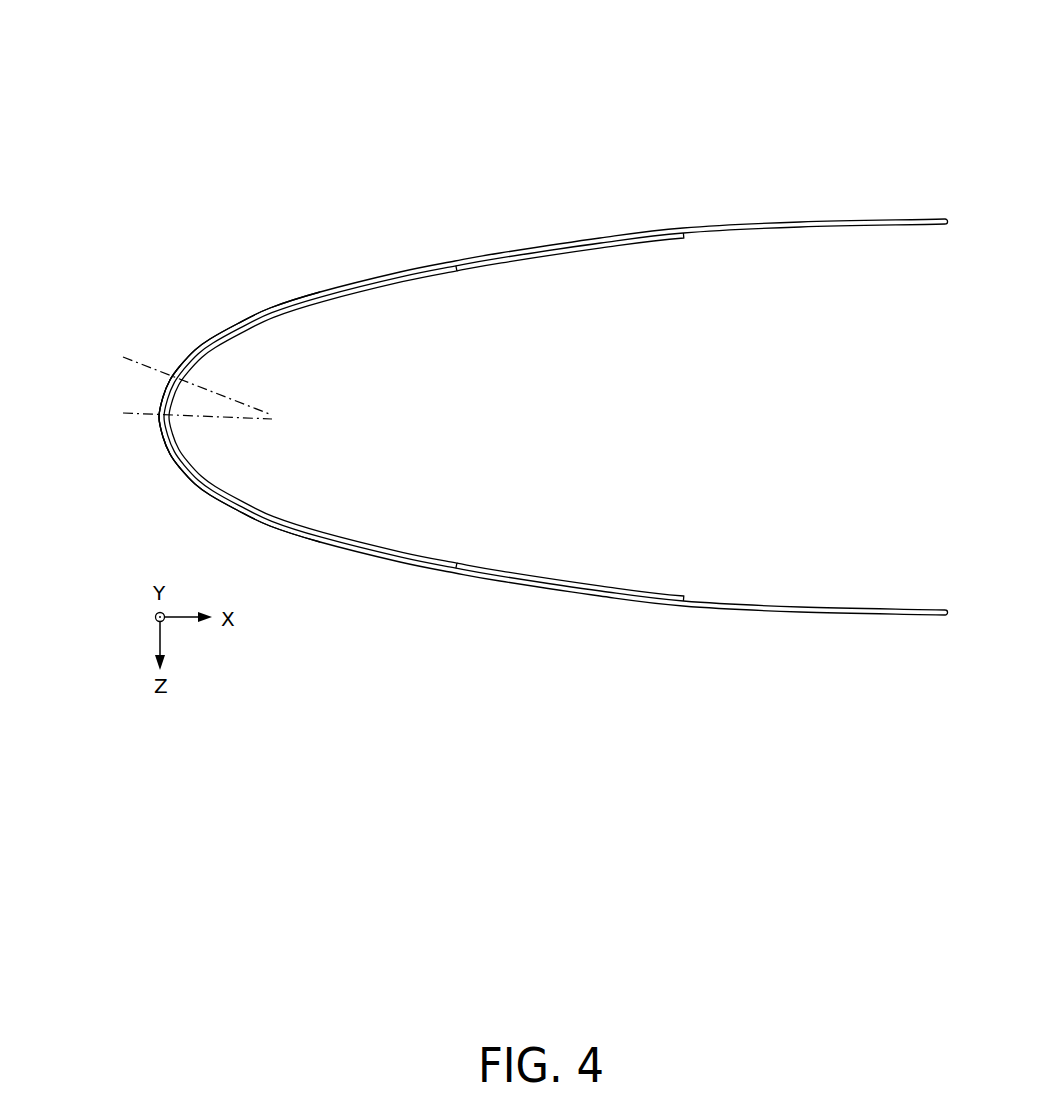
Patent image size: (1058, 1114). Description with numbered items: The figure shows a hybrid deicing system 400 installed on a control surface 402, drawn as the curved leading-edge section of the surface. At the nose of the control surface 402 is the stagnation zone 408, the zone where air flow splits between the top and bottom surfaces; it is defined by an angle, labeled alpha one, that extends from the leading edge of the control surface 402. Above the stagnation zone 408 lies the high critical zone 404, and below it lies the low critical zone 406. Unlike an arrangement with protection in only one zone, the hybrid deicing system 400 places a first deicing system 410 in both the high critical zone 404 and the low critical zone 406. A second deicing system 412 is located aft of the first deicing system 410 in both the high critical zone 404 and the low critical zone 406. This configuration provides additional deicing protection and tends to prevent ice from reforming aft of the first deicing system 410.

The hybrid deicing system 400 is at (398, 100).
The control surface 402 is at (855, 222).
The high critical zone 404 is at (236, 325).
The low critical zone 406 is at (288, 532).
The stagnation zone 408 is at (138, 390).
The first deicing system 410 is at (252, 329).
The second deicing system 412 is at (523, 255).